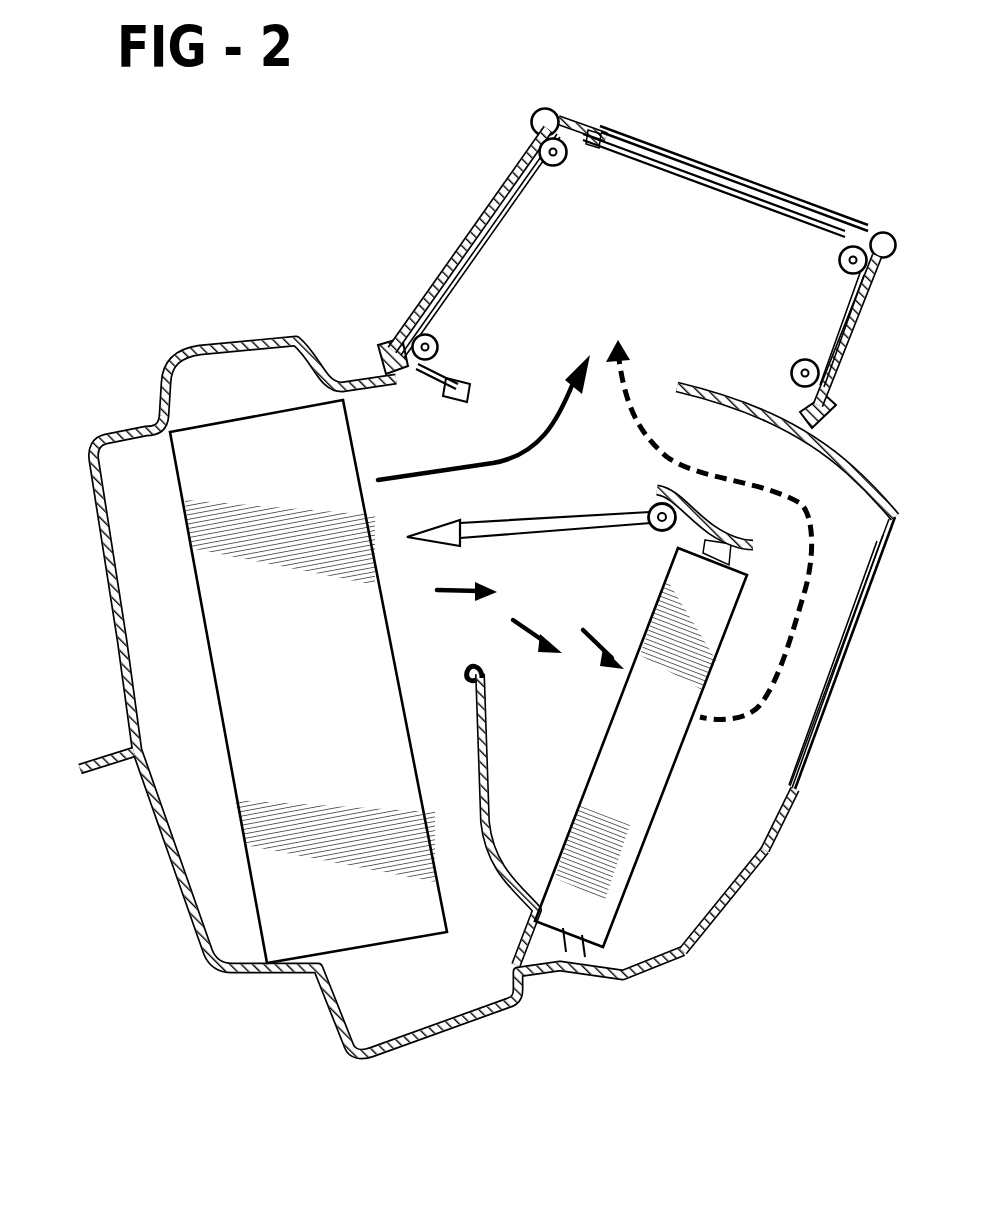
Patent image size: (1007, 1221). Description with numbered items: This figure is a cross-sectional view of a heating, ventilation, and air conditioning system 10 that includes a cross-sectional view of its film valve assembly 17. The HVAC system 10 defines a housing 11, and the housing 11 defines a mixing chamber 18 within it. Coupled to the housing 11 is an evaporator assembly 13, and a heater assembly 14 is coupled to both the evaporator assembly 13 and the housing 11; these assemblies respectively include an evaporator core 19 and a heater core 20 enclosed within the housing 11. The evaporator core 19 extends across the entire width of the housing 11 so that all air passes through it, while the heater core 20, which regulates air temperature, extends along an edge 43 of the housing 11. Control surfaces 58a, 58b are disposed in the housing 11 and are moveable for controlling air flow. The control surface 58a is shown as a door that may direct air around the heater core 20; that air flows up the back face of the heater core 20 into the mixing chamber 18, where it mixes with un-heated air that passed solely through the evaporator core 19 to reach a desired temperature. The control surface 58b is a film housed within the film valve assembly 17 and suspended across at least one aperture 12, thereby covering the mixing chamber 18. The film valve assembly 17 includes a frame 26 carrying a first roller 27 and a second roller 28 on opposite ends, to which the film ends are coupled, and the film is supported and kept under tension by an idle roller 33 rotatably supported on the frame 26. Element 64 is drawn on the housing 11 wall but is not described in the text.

The heating, ventilation, and air conditioning system (HVAC) 10 is at (142, 318).
The housing 11 is at (696, 966).
The aperture 12 is at (613, 137).
The evaporator assembly 13 is at (120, 703).
The heater assembly 14 is at (767, 850).
The film valve assembly 17 is at (572, 120).
The mixing chamber 18 is at (487, 290).
The evaporator core 19 is at (257, 862).
The heater core 20 is at (633, 852).
The frame 26 is at (808, 190).
The first roller 27 is at (400, 343).
The second roller 28 is at (818, 366).
The idle roller 33 is at (540, 147).
The edge 43 is at (783, 797).
The control surface 58a is at (557, 520).
The control surface 58b is at (755, 183).
The access panel 64 is at (843, 683).